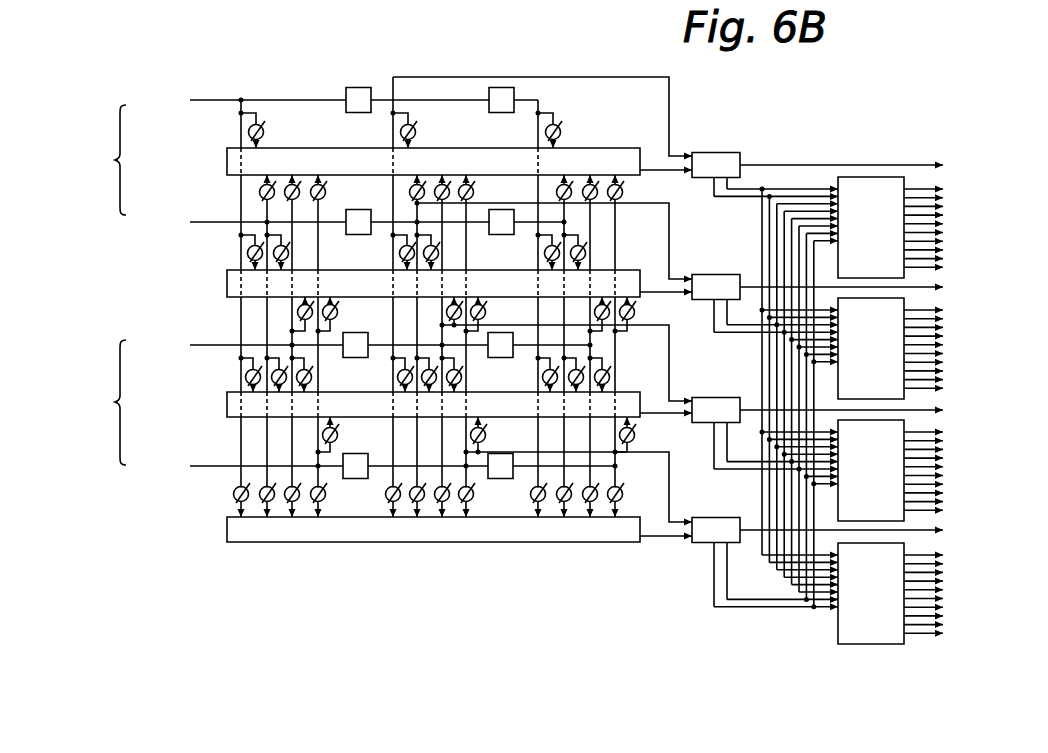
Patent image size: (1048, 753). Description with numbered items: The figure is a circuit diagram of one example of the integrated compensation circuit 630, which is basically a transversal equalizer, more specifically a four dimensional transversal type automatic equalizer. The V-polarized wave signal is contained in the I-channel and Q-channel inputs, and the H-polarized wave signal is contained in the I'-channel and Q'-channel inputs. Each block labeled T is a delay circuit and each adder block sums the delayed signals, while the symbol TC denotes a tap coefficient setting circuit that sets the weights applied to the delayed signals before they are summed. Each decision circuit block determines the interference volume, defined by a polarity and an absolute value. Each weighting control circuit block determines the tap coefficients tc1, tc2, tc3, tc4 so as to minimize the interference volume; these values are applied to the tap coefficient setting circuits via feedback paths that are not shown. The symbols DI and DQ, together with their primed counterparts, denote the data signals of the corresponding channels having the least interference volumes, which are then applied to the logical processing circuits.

The integrated compensation circuit 630 is at (543, 47).
The tap coefficient setting circuit TC is at (355, 431).
The data signal of the I-channel DI is at (836, 166).
The data signal of the Q-channel DQ is at (842, 288).
The tap coefficient tc1 is at (922, 227).
The tap coefficient tc2 is at (922, 348).
The tap coefficient tc3 is at (922, 470).
The tap coefficient tc4 is at (922, 593).